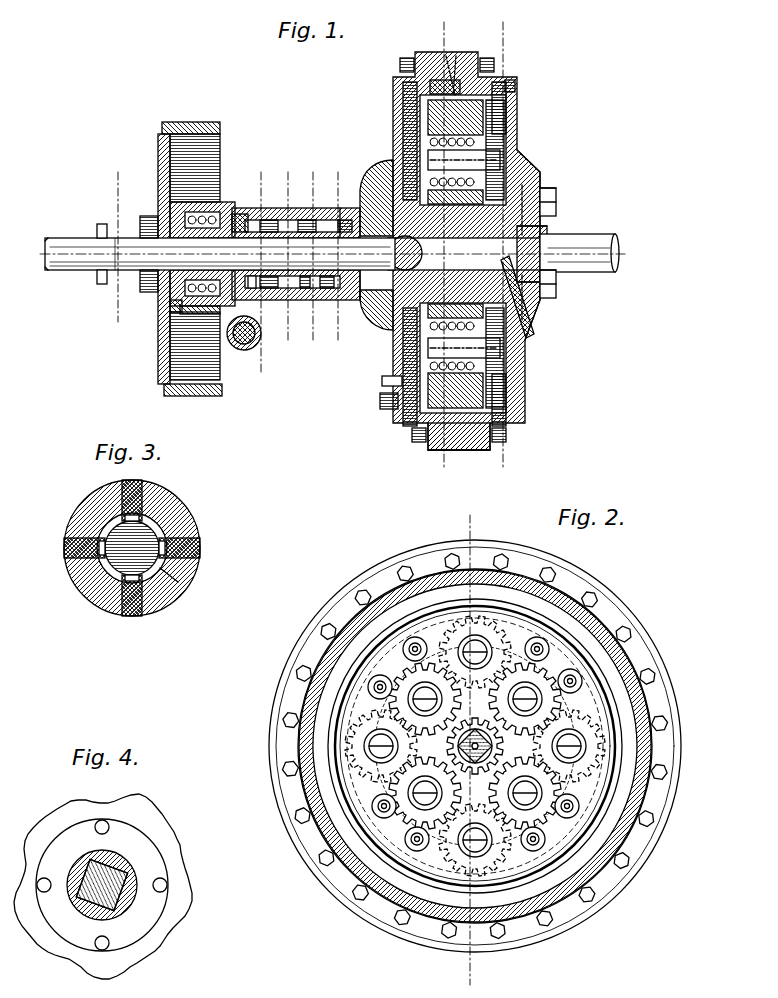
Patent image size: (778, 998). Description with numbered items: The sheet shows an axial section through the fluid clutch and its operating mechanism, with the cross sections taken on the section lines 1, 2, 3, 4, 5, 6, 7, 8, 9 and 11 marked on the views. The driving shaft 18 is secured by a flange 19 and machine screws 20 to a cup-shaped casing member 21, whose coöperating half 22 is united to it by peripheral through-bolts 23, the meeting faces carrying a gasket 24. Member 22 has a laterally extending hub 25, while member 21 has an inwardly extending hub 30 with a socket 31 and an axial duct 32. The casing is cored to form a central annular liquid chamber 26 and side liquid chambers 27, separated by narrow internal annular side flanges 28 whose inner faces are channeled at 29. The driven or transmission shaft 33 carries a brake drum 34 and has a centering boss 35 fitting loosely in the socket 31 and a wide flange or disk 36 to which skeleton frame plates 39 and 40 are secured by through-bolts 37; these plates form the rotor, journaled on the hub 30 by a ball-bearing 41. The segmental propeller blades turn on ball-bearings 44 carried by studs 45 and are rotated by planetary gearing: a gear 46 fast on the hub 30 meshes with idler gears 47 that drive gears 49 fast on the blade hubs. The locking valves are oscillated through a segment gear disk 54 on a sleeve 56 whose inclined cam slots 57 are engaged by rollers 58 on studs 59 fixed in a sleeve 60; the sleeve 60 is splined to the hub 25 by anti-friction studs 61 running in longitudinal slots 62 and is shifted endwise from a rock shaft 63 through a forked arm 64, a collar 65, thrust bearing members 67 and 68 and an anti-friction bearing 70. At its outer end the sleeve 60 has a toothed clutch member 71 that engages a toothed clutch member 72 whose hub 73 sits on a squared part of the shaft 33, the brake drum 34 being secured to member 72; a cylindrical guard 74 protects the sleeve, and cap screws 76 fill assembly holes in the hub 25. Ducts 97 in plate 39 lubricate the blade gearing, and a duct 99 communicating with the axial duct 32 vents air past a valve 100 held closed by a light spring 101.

In FIG. 2, the section line 1— 1 is at (487, 952).
In FIG. 1, the section line 2— 2 is at (520, 455).
In FIG. 1, the section line 3— 3 is at (300, 332).
In FIG. 1, the section line 4— 4 is at (132, 312).
In FIG. 1, the section line 5— 5 is at (325, 332).
In FIG. 1, the section line 6— 6 is at (456, 455).
In FIG. 2, the section line 7— 7 is at (620, 563).
In FIG. 1, the section line 8— 8 is at (276, 345).
In FIG. 1, the section line 9— 9 is at (350, 332).
In FIG. 1, the section line 11— 11 is at (395, 180).
In FIG. 1, the driving shaft 18 is at (606, 248).
In FIG. 1, the flange 19 is at (540, 200).
In FIG. 1, the machine screws 20 is at (556, 202).
In FIG. 1, the cup-shaped casing member 21 is at (505, 78).
In FIG. 2, the cup-shaped casing member 21 is at (676, 742).
In FIG. 1, the coöperating casing member 22 is at (428, 86).
In FIG. 1, the peripheral through-bolts 23 is at (500, 445).
In FIG. 2, the peripheral through-bolts 23 is at (432, 562).
In FIG. 1, the gasket 24 is at (470, 445).
In FIG. 1, the hub 25 is at (344, 208).
In FIG. 3, the hub 25 is at (168, 512).
In FIG. 1, the central annular liquid chamber 26 is at (512, 88).
In FIG. 1, the side liquid chambers 27 is at (400, 97).
In FIG. 2, the side liquid chambers 27 is at (650, 702).
In FIG. 1, the internal annular side flanges 28 is at (404, 115).
In FIG. 1, the channels 29 is at (506, 395).
In FIG. 1, the hub 30 is at (548, 226).
In FIG. 2, the hub 30 is at (292, 762).
In FIG. 1, the socket 31 is at (378, 316).
In FIG. 1, the axial duct 32 is at (552, 242).
In FIG. 1, the driven shaft 33 is at (156, 272).
In FIG. 4, the driven shaft 33 is at (135, 895).
In FIG. 1, the brake drum 34 is at (220, 146).
In FIG. 4, the brake drum 34 is at (160, 834).
In FIG. 1, the centering boss 35 is at (378, 300).
In FIG. 1, the flange or disk 36 is at (392, 322).
In FIG. 2, the through-bolts 37 is at (404, 809).
In FIG. 1, the skeleton frame plate 39 is at (388, 408).
In FIG. 2, the skeleton frame plate 40 is at (625, 760).
In FIG. 1, the ball-bearing 41 is at (520, 175).
In FIG. 1, the ball-bearings 44 is at (456, 95).
In FIG. 2, the studs or shafts 45 is at (661, 748).
In FIG. 1, the gear 46 is at (548, 204).
In FIG. 2, the gear 46 is at (610, 692).
In FIG. 1, the idler gears 47 is at (464, 279).
In FIG. 2, the idler gears 47 is at (394, 671).
In FIG. 1, the gears 49 is at (500, 126).
In FIG. 2, the gears 49 is at (530, 639).
In FIG. 1, the segment gear disk 54 is at (385, 170).
In FIG. 1, the sleeve 56 is at (326, 290).
In FIG. 1, the cam slots 57 is at (345, 218).
In FIG. 1, the rollers 58 is at (305, 218).
In FIG. 1, the studs 59 is at (304, 290).
In FIG. 1, the sleeve 60 is at (272, 218).
In FIG. 3, the sleeve 60 is at (110, 575).
In FIG. 3, the anti-friction studs 61 is at (118, 505).
In FIG. 1, the longitudinal slots 62 is at (268, 288).
In FIG. 3, the longitudinal slots 62 is at (178, 582).
In FIG. 1, the rock shaft 63 is at (244, 350).
In FIG. 1, the forked arm 64 is at (218, 314).
In FIG. 1, the collar 65 is at (176, 310).
In FIG. 1, the thrust bearing member 67 is at (242, 214).
In FIG. 1, the thrust bearing member 68 is at (150, 232).
In FIG. 1, the anti-friction bearing 70 is at (216, 212).
In FIG. 1, the toothed clutch member 71 is at (152, 292).
In FIG. 1, the toothed clutch member 72 is at (162, 212).
In FIG. 4, the toothed clutch member 72 is at (152, 860).
In FIG. 1, the hub 73 is at (104, 232).
In FIG. 1, the cylindrical guard 74 is at (254, 290).
In FIG. 1, the cap screws 76 is at (340, 208).
In FIG. 1, the ducts 97 is at (398, 384).
In FIG. 1, the duct 99 is at (556, 288).
In FIG. 1, the valve 100 is at (556, 278).
In FIG. 1, the spring 101 is at (535, 310).